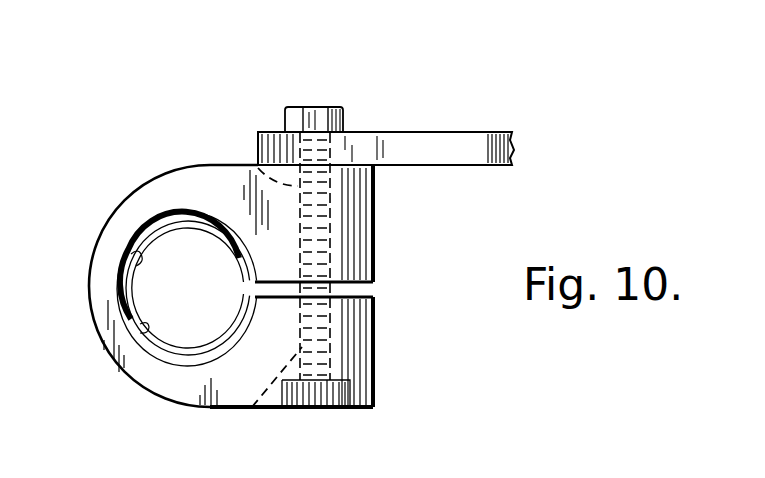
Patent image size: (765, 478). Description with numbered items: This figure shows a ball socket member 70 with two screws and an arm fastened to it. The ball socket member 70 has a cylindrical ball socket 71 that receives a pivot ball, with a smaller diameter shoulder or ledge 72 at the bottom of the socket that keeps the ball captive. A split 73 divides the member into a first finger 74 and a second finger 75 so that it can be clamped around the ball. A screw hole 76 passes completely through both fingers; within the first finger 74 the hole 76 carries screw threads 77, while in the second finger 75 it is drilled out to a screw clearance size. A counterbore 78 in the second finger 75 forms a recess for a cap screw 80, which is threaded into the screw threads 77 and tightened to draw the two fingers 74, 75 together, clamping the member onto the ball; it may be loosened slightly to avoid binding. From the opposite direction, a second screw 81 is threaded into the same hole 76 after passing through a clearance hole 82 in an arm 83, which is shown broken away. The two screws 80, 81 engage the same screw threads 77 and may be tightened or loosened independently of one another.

The ball socket member 70 is at (140, 189).
The cylindrical ball socket 71 is at (138, 267).
The shoulder or ledge 72 is at (143, 327).
The split 73 is at (357, 290).
The first finger 74 is at (368, 213).
The second finger 75 is at (366, 353).
The screw hole 76 is at (264, 396).
The screw threads 77 is at (257, 165).
The counterbore 78 is at (358, 431).
The cap screw 80 is at (288, 413).
The second screw 81 is at (313, 107).
The clearance hole 82 is at (290, 147).
The arm 83 is at (422, 132).